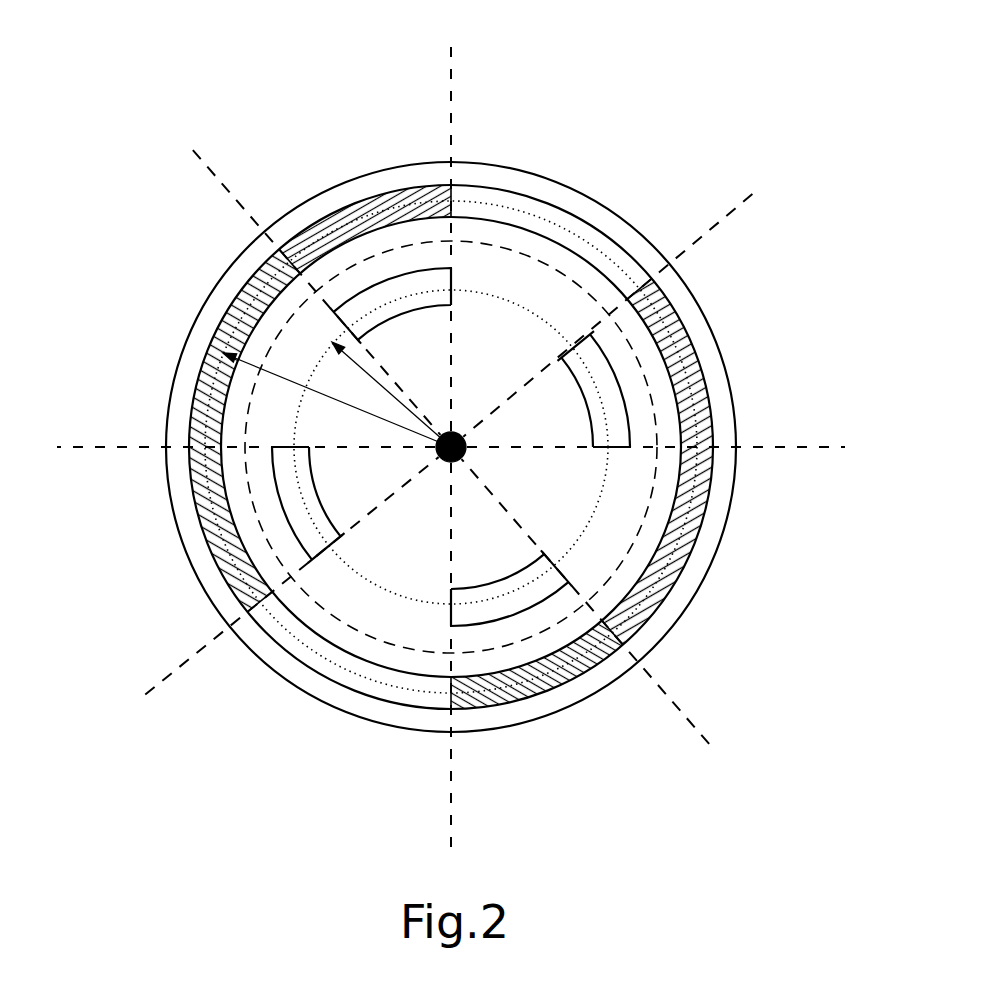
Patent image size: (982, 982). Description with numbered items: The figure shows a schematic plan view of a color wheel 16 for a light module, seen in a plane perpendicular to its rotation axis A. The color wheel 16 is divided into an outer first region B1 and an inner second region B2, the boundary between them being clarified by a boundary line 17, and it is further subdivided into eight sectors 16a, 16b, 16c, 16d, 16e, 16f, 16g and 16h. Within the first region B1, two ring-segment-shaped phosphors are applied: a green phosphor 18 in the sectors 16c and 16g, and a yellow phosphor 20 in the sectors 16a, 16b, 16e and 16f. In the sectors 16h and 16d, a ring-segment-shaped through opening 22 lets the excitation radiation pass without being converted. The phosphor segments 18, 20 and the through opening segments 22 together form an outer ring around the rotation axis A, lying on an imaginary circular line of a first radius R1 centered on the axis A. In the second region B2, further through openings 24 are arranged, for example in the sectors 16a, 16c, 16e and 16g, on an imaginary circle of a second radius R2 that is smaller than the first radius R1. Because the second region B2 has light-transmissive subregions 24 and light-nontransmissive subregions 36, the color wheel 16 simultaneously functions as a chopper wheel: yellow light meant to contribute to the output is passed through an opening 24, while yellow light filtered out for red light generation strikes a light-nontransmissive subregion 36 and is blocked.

The color wheel 16 is at (192, 92).
The sector 16a is at (786, 274).
The sector 16b is at (827, 595).
The sector 16c is at (600, 815).
The sector 16d is at (260, 783).
The sector 16e is at (99, 533).
The sector 16f is at (142, 267).
The sector 16g is at (299, 80).
The sector 16h is at (645, 85).
The boundary line 17 is at (490, 240).
The green phosphor 18 is at (323, 225).
The yellow phosphor 20 is at (712, 400).
The through opening 22 is at (637, 227).
The through opening 24 is at (405, 280).
The light-nontransmissive subregion 36 is at (617, 250).
The rotation axis A is at (458, 440).
The first radius R1 is at (280, 377).
The second radius R2 is at (390, 392).
The first region B1 is at (733, 503).
The second region B2 is at (640, 506).